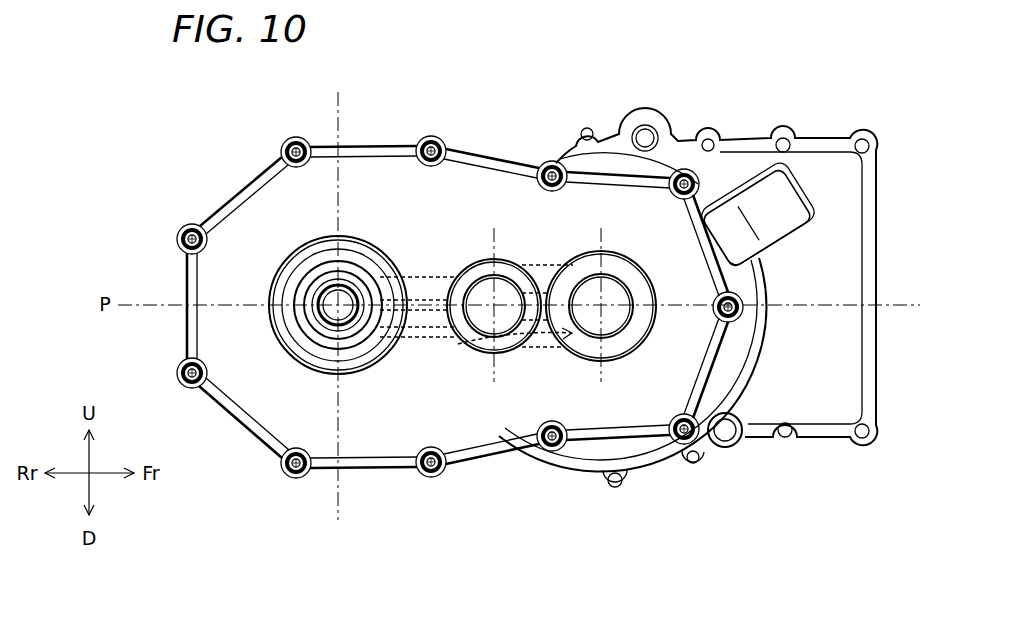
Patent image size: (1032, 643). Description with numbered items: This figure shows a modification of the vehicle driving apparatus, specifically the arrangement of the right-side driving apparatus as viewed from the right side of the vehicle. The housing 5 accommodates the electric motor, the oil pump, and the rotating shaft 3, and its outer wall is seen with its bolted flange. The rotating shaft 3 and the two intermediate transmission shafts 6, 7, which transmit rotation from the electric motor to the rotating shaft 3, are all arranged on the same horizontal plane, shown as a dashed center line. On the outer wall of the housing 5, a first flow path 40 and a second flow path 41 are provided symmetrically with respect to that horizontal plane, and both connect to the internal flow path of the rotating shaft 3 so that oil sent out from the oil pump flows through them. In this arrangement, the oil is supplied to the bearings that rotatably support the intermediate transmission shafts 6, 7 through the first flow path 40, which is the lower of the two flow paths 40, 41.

The rotating shaft 3 is at (330, 313).
The housing 5 is at (822, 165).
The intermediate transmission shaft 6 is at (610, 320).
The intermediate transmission shaft 7 is at (500, 320).
The first flow path 40 is at (423, 330).
The second flow path 41 is at (426, 285).